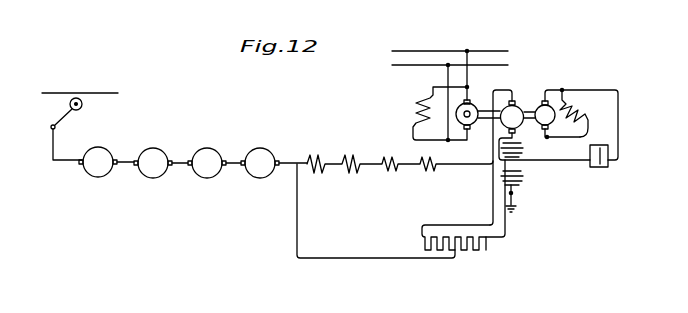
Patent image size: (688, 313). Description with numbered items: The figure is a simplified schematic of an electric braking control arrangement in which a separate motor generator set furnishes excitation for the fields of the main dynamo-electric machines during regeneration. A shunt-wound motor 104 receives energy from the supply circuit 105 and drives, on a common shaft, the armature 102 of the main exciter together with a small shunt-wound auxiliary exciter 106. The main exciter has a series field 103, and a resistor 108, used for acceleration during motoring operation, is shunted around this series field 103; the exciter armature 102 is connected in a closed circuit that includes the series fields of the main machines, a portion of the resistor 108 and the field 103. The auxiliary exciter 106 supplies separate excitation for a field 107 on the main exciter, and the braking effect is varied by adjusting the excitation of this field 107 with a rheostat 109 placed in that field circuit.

The armature 102 is at (518, 98).
The series field 103 is at (524, 179).
The shunt-wound motor 104 is at (473, 103).
The supply circuit 105 is at (392, 57).
The shunt-wound auxiliary exciter 106 is at (566, 130).
The field 107 is at (524, 149).
The resistor 108 is at (480, 250).
The rheostat 109 is at (607, 168).